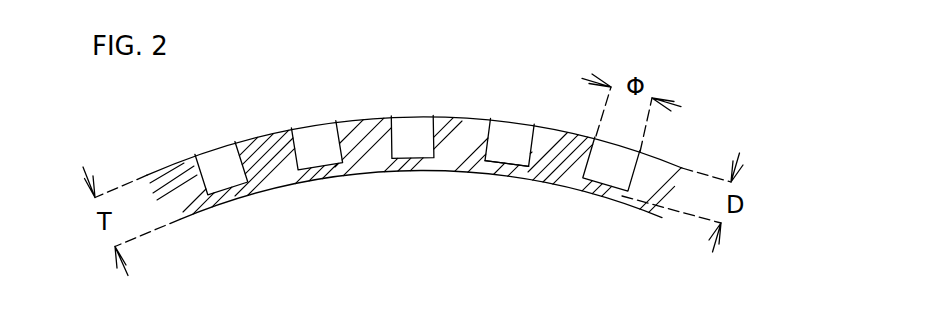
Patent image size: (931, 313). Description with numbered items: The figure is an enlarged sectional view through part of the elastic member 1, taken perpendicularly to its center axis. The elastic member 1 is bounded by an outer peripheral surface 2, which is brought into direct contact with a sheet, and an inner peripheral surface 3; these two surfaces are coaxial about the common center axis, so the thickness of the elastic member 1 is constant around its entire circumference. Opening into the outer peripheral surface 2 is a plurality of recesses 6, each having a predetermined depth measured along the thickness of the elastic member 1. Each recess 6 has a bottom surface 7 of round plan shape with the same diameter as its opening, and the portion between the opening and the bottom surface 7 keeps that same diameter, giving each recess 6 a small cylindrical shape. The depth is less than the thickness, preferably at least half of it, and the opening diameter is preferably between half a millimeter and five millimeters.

The elastic member 1 is at (248, 74).
The outer peripheral surface 2 is at (374, 118).
The inner peripheral surface 3 is at (380, 173).
The recess 6 is at (518, 141).
The bottom surface 7 is at (501, 162).